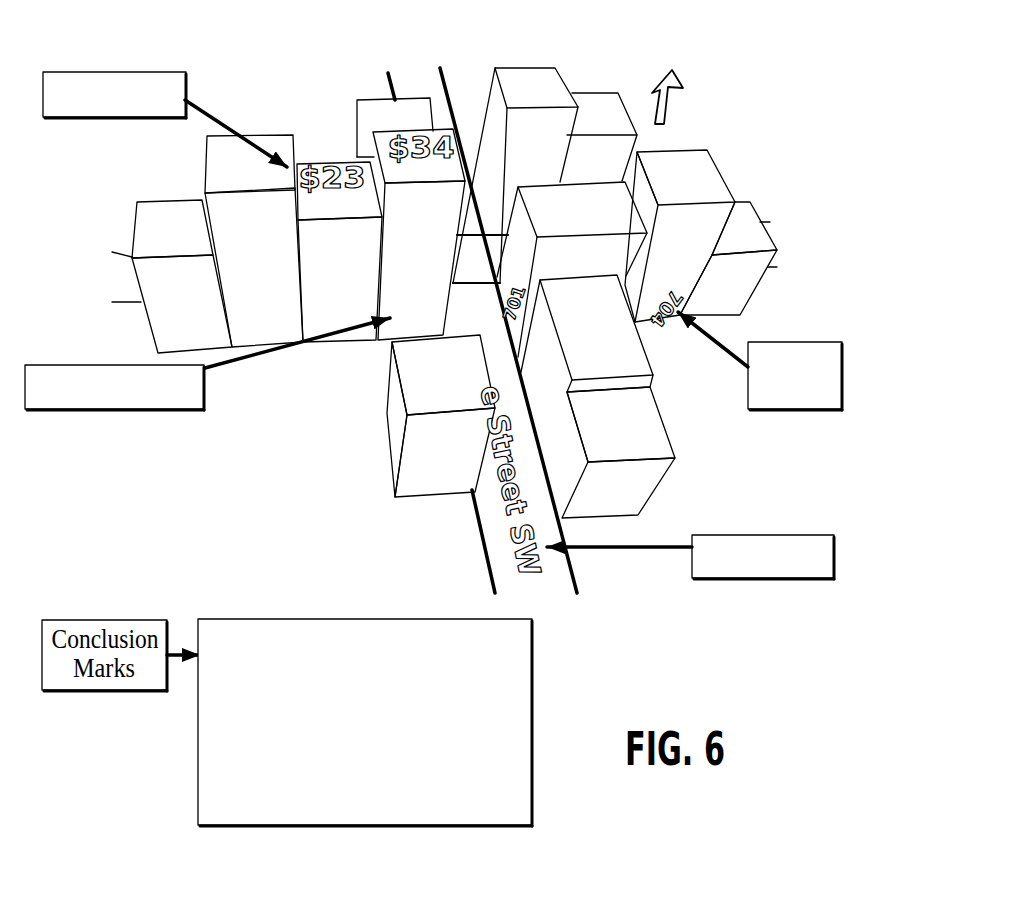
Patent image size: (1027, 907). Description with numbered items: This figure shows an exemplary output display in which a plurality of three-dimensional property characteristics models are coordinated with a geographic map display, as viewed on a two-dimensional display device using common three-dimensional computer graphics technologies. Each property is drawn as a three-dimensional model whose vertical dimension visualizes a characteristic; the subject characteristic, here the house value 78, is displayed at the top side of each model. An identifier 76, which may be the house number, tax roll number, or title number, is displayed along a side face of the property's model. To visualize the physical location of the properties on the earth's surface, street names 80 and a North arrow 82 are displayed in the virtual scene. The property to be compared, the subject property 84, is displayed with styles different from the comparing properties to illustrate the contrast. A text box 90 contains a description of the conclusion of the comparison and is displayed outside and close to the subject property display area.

The identifier 76 is at (787, 412).
The house value 78 is at (85, 72).
The street names 80 is at (787, 582).
The North arrow 82 is at (678, 88).
The subject property 84 is at (59, 363).
The text box 90 is at (262, 618).